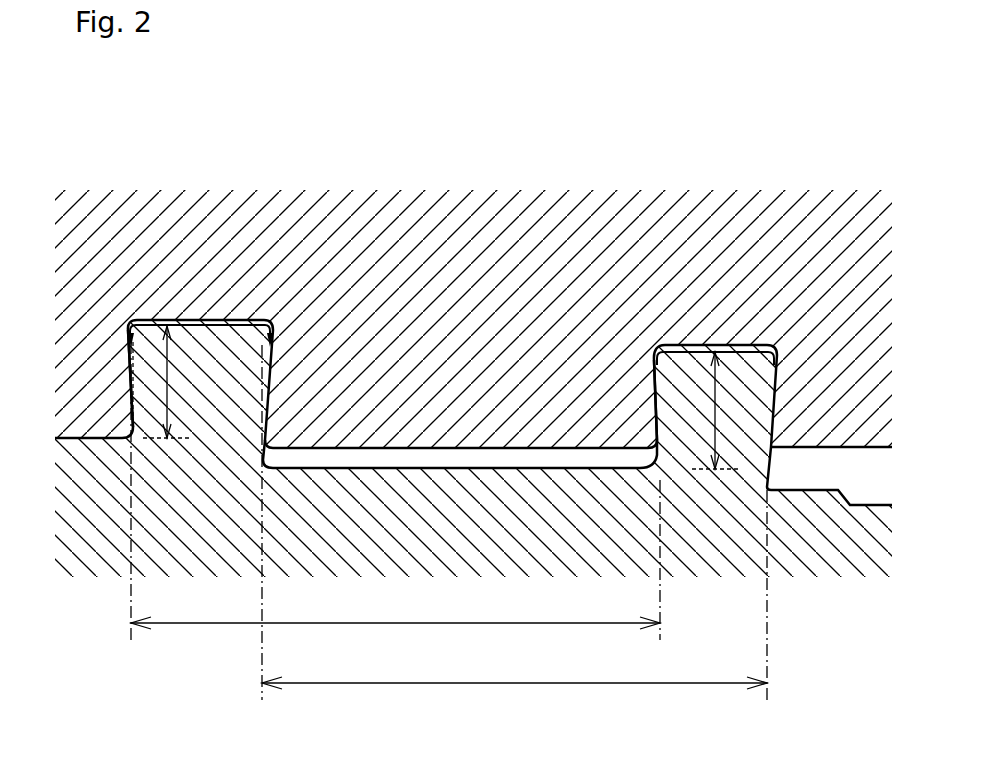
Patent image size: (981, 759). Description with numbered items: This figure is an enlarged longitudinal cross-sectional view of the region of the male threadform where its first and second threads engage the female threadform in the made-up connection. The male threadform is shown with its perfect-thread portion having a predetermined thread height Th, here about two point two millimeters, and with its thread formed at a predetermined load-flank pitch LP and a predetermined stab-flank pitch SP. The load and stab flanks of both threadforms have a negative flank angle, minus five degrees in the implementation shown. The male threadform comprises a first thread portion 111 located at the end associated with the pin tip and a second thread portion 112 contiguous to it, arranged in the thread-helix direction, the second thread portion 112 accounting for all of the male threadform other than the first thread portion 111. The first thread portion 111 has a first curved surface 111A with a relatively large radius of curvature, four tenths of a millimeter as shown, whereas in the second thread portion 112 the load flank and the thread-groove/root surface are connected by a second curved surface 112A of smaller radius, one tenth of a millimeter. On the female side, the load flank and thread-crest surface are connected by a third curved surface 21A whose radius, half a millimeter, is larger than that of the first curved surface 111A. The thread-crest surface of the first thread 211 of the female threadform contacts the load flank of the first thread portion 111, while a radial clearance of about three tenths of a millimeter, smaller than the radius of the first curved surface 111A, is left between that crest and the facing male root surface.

The first thread portion 111 is at (747, 350).
The first curved surface 111A is at (655, 448).
The second thread portion 112 is at (220, 322).
The second curved surface 112A is at (126, 436).
The third curved surface 21A is at (678, 446).
The first thread of the female threadform 211 is at (420, 453).
The thread height Th is at (446, 397).
The load-flank pitch LP is at (395, 491).
The stab-flank pitch SP is at (514, 522).